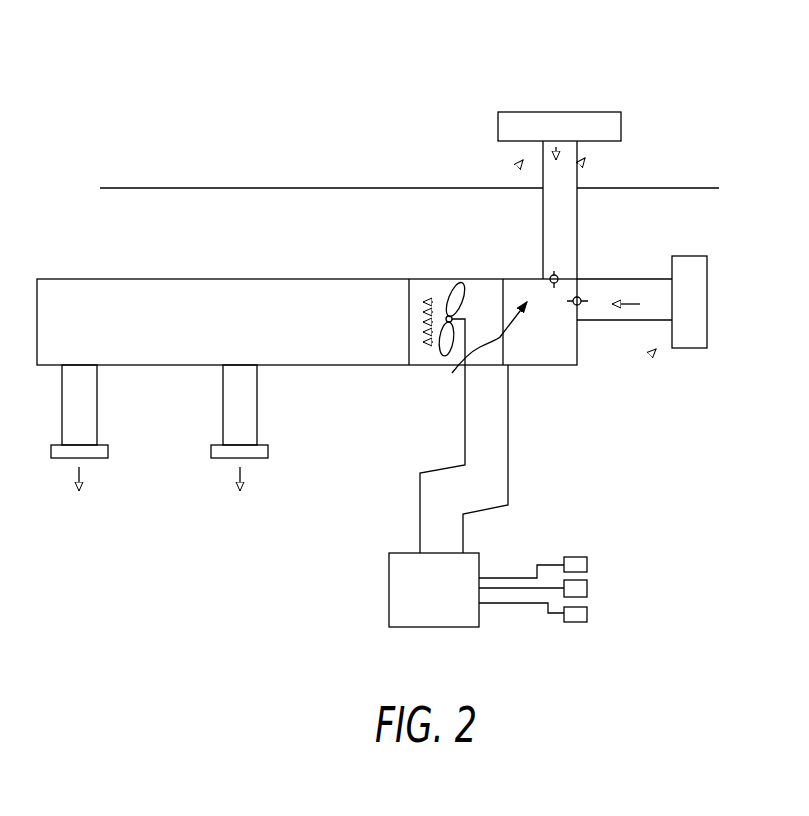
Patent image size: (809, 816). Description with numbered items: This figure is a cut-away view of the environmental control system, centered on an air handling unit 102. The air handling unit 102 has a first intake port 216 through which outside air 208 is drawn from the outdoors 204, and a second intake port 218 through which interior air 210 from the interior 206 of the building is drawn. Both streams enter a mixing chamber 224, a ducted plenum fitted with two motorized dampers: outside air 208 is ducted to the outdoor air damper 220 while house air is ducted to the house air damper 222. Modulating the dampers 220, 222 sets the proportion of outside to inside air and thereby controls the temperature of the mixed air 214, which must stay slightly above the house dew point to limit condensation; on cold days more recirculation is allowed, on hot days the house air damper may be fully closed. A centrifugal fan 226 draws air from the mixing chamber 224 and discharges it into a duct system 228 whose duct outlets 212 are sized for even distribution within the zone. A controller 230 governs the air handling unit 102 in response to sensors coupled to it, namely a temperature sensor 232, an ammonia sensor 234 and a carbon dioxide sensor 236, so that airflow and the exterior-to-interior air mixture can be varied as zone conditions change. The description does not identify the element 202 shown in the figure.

The air handling unit 102 is at (683, 108).
The vehicle floor 202 is at (122, 188).
The outdoors 204 is at (246, 136).
The interior 206 is at (638, 493).
The outside air 208 is at (569, 147).
The interior air 210 is at (640, 353).
The duct outlets 212 is at (268, 449).
The mixed air 214 is at (167, 504).
The first intake port 216 is at (577, 223).
The second intake port 218 is at (642, 278).
The outdoor air damper 220 is at (470, 353).
The house air damper 222 is at (571, 302).
The mixing chamber 224 is at (548, 347).
The centrifugal fan 226 is at (472, 296).
The duct system 228 is at (202, 279).
The controller 230 is at (476, 473).
The temperature sensor 232 is at (583, 558).
The ammonia sensor 234 is at (580, 590).
The carbon dioxide sensor 236 is at (580, 612).